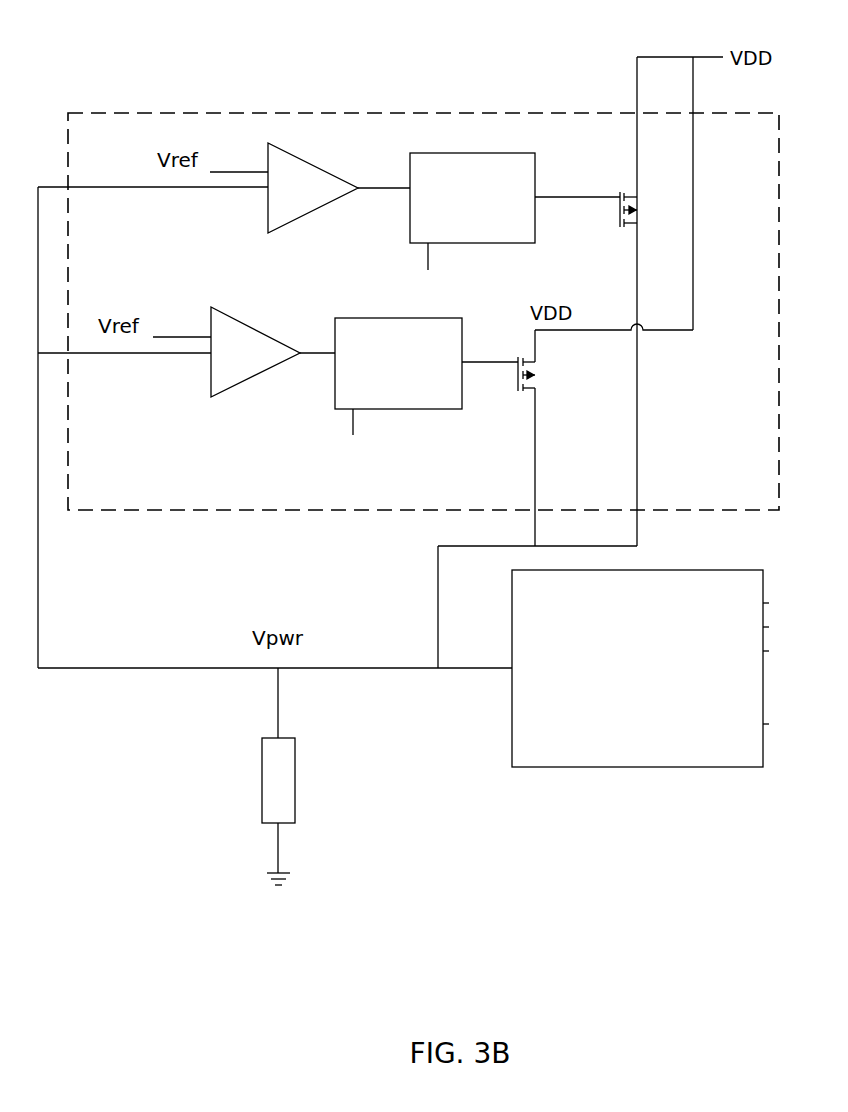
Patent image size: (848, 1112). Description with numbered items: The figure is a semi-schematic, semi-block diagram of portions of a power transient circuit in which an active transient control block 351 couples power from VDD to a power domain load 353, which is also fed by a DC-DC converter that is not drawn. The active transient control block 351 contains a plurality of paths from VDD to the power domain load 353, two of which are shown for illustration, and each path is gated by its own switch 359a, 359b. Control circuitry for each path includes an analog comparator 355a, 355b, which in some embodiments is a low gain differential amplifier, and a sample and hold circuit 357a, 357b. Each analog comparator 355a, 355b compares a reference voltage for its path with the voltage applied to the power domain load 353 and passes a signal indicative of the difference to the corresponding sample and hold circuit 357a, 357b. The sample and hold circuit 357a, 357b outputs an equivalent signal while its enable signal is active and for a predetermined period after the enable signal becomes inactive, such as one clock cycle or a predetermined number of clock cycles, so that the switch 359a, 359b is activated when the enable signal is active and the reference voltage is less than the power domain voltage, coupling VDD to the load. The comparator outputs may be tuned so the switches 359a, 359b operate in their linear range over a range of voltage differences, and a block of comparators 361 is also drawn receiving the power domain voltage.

The active transient control block 351 is at (288, 112).
The power domain load 353 is at (260, 779).
The analog comparator 355a is at (288, 155).
The analog comparator 355b is at (240, 318).
The sample and hold circuit 357a is at (537, 172).
The sample and hold circuit 357b is at (402, 317).
The switch 359a is at (619, 218).
The switch 359b is at (535, 365).
The comparators 361 is at (718, 568).